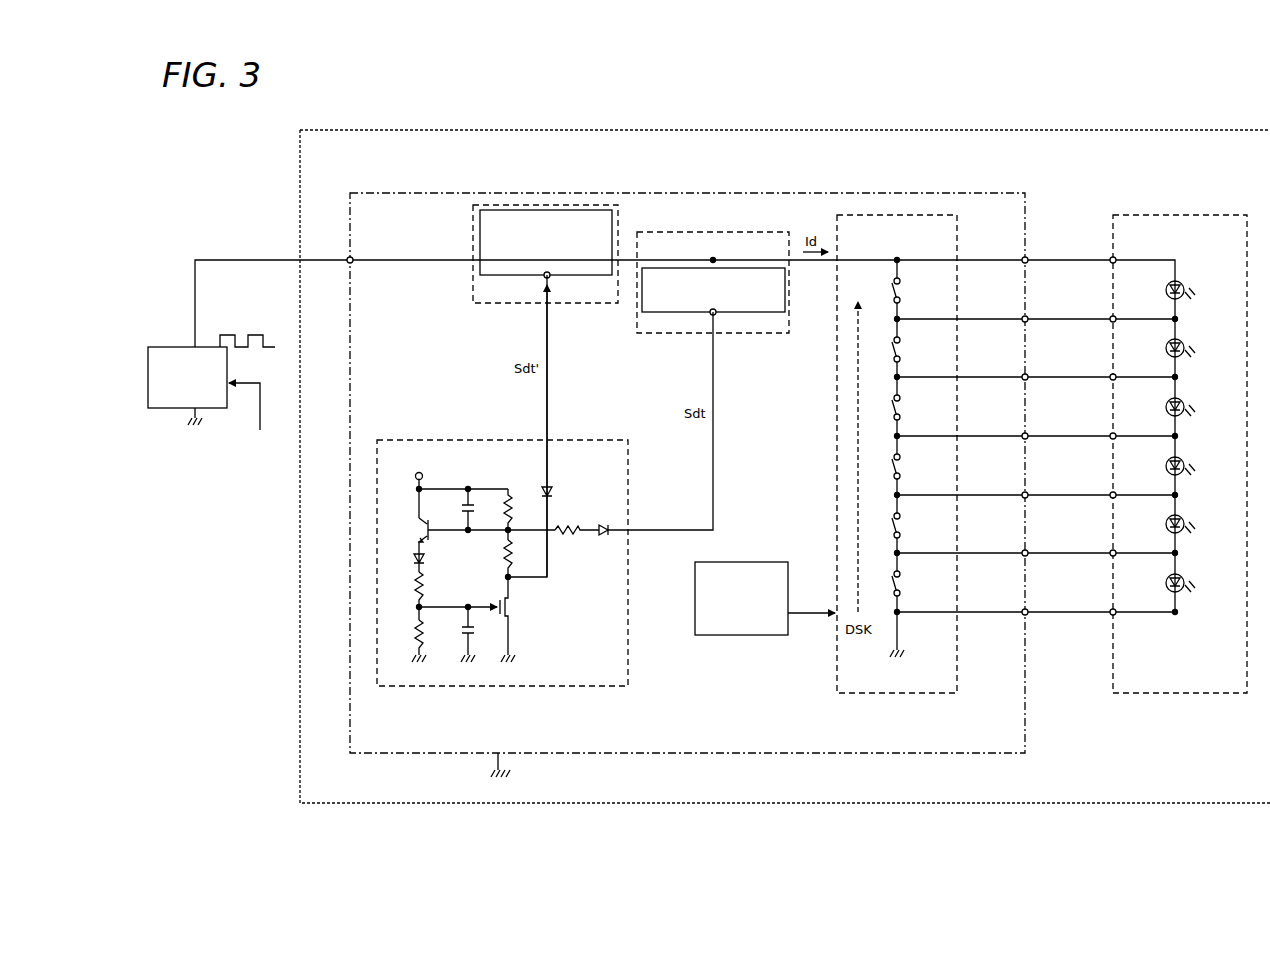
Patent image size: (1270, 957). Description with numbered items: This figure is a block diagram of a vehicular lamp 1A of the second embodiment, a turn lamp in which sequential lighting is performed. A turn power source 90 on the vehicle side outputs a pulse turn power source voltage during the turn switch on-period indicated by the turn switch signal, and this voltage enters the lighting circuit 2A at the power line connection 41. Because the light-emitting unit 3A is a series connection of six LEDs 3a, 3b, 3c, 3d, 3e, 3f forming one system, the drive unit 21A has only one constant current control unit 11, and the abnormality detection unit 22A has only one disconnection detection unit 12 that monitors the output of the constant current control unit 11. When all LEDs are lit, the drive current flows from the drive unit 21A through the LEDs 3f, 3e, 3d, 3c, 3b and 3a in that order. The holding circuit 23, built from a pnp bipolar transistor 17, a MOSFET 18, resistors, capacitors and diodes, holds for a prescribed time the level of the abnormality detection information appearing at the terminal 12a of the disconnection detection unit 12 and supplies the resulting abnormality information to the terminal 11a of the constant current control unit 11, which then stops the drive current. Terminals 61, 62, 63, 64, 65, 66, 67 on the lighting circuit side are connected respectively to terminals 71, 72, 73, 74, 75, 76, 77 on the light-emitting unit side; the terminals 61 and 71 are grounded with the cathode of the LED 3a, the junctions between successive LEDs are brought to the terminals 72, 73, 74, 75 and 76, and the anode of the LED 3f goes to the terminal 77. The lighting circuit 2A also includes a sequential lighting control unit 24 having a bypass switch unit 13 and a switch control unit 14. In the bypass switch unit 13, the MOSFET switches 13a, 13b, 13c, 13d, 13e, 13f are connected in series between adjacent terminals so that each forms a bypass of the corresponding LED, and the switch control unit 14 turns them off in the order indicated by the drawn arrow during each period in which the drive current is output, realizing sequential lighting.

The vehicular lamp 1A is at (915, 129).
The lighting circuit 2A is at (975, 193).
The light-emitting unit 3A is at (1163, 215).
The LED 3a is at (1185, 579).
The LED 3b is at (1185, 520).
The LED 3c is at (1185, 462).
The LED 3d is at (1185, 403).
The LED 3e is at (1185, 343).
The LED 3f is at (1185, 285).
The constant current control unit 11 is at (583, 275).
The terminal of constant current control unit 11a is at (545, 278).
The disconnection detection unit 12 is at (745, 312).
The terminal of disconnection detection unit 12a is at (711, 315).
The bypass switch unit 13 is at (837, 643).
The switch 13a is at (911, 582).
The switch 13b is at (912, 524).
The switch 13c is at (911, 465).
The switch 13d is at (912, 406).
The switch 13e is at (911, 348).
The switch 13f is at (910, 289).
The switch control unit 14 is at (745, 635).
The pnp bipolar transistor 17 is at (416, 530).
The MOSFET 18 is at (512, 607).
The drive unit 21A is at (572, 303).
The abnormality detection unit 22A is at (789, 318).
The holding circuit 23 is at (428, 440).
The sequential lighting control unit 24 is at (795, 684).
The power supply line 41 is at (352, 263).
The terminal 61 is at (1027, 610).
The terminal 62 is at (1027, 551).
The terminal 63 is at (1027, 493).
The terminal 64 is at (1027, 434).
The terminal 65 is at (1027, 375).
The terminal 66 is at (1027, 317).
The terminal 67 is at (1027, 258).
The terminal 71 is at (1111, 614).
The terminal 72 is at (1111, 555).
The terminal 73 is at (1111, 497).
The terminal 74 is at (1111, 438).
The terminal 75 is at (1111, 379).
The terminal 76 is at (1111, 321).
The terminal 77 is at (1111, 262).
The turn power source 90 is at (170, 347).